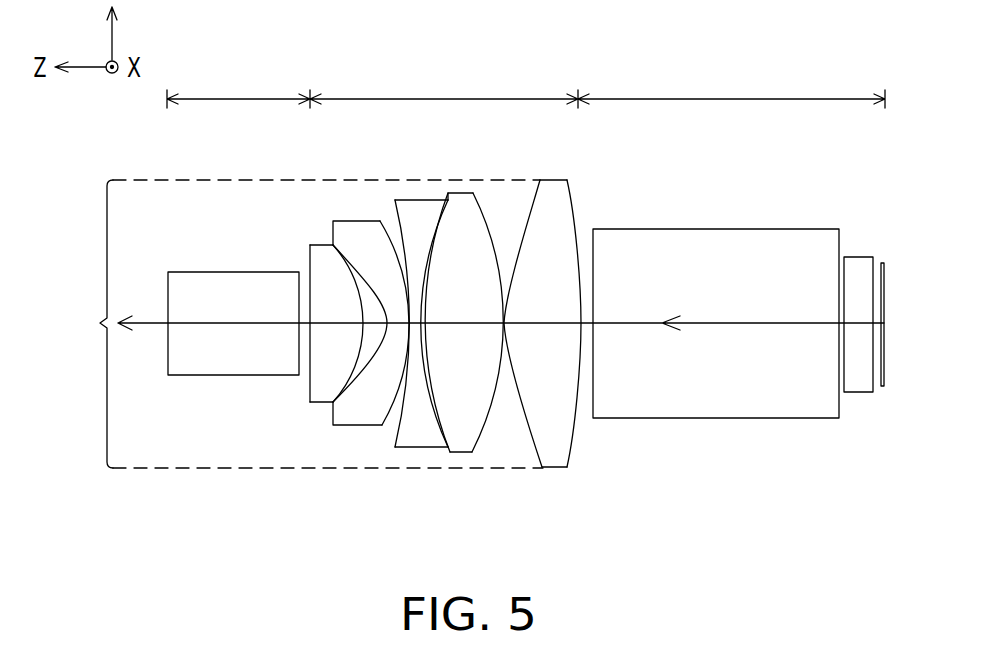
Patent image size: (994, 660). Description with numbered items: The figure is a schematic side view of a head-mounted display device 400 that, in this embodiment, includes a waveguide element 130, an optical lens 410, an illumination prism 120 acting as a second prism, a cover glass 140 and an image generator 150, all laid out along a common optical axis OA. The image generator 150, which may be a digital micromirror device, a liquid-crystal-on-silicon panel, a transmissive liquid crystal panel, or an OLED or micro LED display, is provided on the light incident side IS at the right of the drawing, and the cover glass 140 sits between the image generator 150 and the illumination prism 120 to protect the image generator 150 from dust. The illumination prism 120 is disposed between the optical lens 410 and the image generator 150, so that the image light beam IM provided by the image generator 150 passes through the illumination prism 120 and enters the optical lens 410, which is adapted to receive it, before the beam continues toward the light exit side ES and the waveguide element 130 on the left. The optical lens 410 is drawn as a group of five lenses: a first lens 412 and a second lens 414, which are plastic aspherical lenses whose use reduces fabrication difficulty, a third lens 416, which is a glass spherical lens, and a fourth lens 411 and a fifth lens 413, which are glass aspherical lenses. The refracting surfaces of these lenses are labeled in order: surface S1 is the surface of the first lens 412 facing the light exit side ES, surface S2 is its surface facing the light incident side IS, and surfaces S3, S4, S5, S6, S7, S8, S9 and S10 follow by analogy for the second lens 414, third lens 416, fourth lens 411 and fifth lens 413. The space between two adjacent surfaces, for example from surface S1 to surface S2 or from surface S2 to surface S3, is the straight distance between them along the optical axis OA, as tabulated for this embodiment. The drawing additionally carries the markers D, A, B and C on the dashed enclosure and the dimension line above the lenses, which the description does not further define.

The head-mounted display device 400 is at (862, 571).
The optical lens 410 is at (310, 519).
The first lens 412 is at (322, 395).
The second lens 414 is at (357, 412).
The third lens 416 is at (420, 433).
The fourth lens 411 is at (463, 438).
The fifth lens 413 is at (548, 410).
The waveguide element 130 is at (165, 519).
The illumination prism 120 is at (592, 519).
The cover glass 140 is at (858, 270).
The image generator 150 is at (885, 278).
The optical axis OA is at (197, 322).
The image light beam IM is at (753, 322).
The light exit side ES is at (45, 323).
The light incident side IS is at (908, 323).
The projection lens D is at (308, 324).
The first segment length A is at (238, 87).
The second segment length B is at (444, 87).
The third segment length C is at (731, 87).
The surface S1 is at (299, 267).
The surface S2 is at (352, 251).
The surface S3 is at (362, 294).
The surface S4 is at (345, 247).
The surface S5 is at (404, 235).
The surface S6 is at (428, 218).
The surface S7 is at (442, 232).
The surface S8 is at (492, 222).
The surface S9 is at (522, 209).
The surface S10 is at (585, 195).